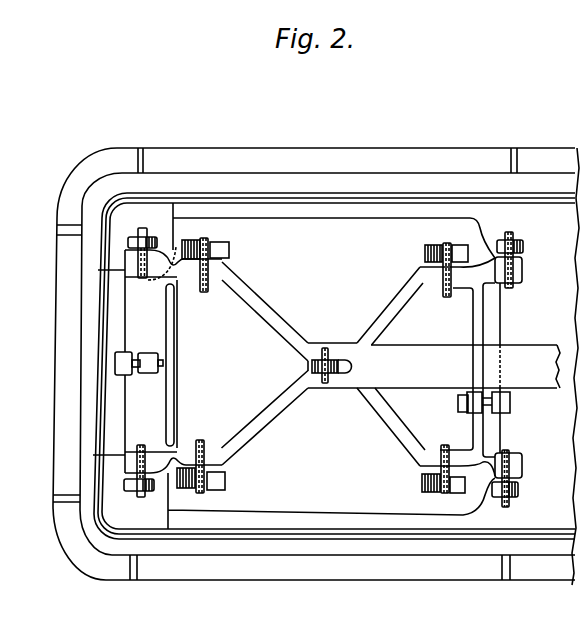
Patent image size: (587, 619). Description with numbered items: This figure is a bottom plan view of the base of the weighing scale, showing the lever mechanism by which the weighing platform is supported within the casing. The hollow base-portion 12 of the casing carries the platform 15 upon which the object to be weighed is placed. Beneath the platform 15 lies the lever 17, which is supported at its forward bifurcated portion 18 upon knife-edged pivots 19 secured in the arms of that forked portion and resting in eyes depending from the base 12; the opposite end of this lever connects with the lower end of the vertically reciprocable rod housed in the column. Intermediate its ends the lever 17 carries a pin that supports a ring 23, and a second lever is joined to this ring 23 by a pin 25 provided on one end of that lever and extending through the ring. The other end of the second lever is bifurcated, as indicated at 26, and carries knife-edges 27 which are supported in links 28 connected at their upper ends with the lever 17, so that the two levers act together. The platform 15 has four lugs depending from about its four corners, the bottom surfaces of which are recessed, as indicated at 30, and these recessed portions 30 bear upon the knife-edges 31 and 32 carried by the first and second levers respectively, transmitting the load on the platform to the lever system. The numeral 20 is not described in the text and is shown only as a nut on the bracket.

The hollow base-portion 12 is at (316, 366).
The platform 15 is at (344, 366).
The lever 17 is at (434, 379).
The bifurcated portion 18 is at (284, 333).
The knife-edged pivots 19 is at (151, 280).
The nut 20 is at (141, 236).
The ring 23 is at (308, 346).
The pin 25 is at (325, 386).
The bifurcated end 26 is at (390, 322).
The knife-edges 27 is at (515, 234).
The links 28 is at (524, 249).
The recessed portions 30 is at (230, 249).
The knife-edges 31 is at (206, 293).
The knife-edges 32 is at (447, 298).